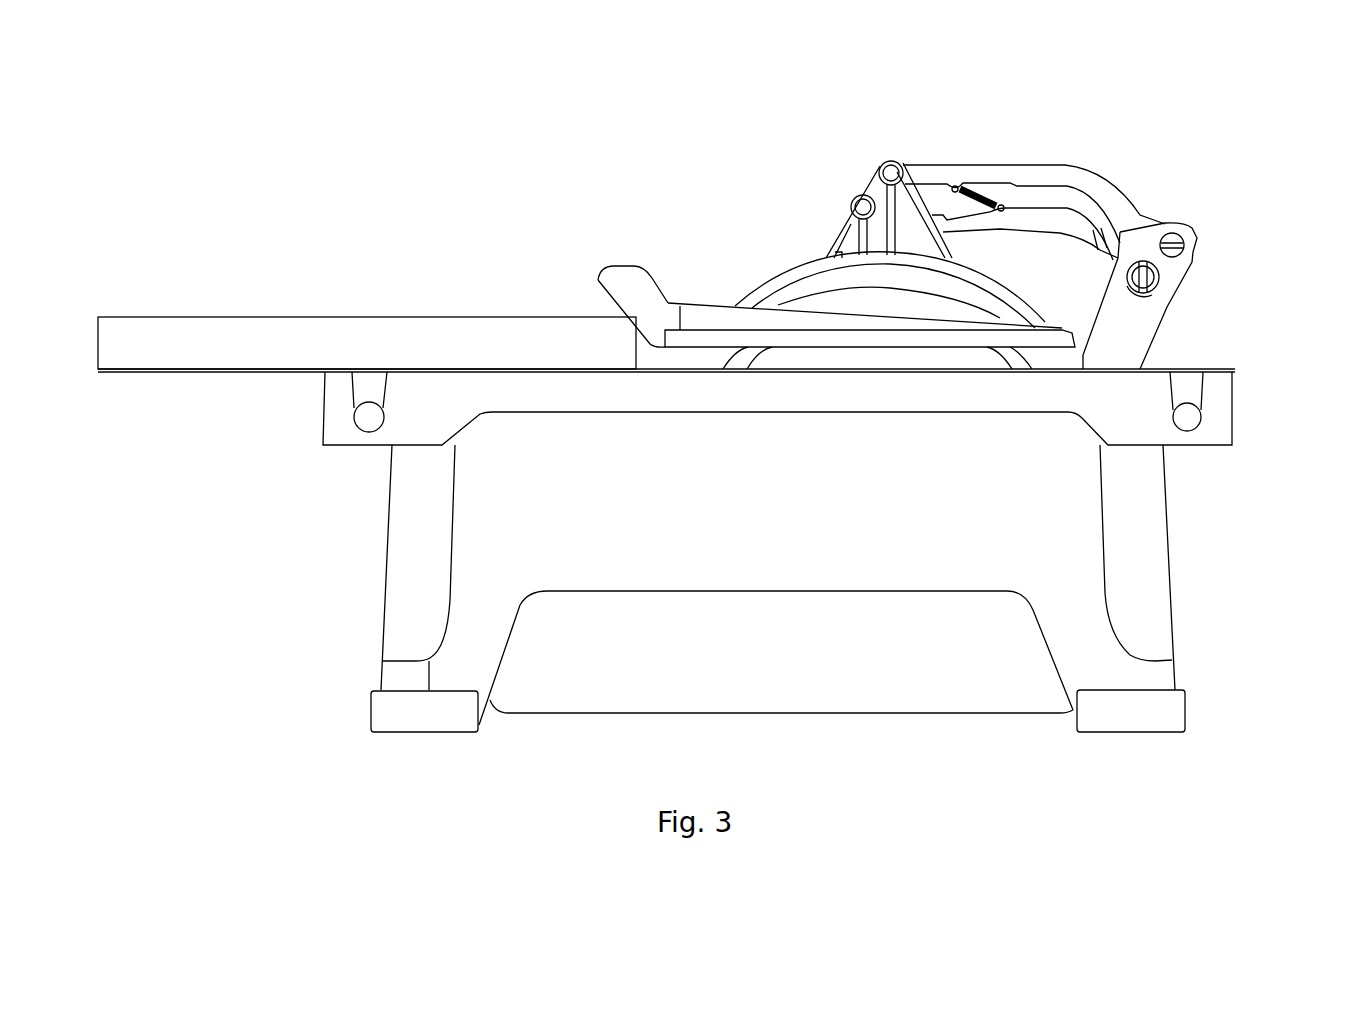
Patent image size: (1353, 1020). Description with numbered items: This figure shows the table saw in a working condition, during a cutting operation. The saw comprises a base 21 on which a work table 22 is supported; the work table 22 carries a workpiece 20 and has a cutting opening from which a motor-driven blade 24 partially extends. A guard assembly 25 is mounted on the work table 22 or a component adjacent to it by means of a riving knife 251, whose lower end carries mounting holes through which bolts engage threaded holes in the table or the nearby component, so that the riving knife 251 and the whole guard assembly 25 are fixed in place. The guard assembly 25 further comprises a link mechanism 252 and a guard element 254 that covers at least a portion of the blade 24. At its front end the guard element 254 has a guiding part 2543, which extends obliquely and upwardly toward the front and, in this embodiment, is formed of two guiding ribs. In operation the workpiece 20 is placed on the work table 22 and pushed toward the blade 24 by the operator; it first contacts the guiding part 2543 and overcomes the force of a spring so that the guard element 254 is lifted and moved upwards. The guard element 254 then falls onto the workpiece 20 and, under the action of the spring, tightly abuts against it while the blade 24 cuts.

The workpiece 20 is at (268, 333).
The base 21 is at (412, 577).
The work table 22 is at (500, 366).
The blade 24 is at (787, 360).
The guard assembly 25 is at (1062, 140).
The riving knife 251 is at (1122, 333).
The link mechanism 252 is at (958, 170).
The guard element 254 is at (787, 258).
The guiding part 2543 is at (627, 296).